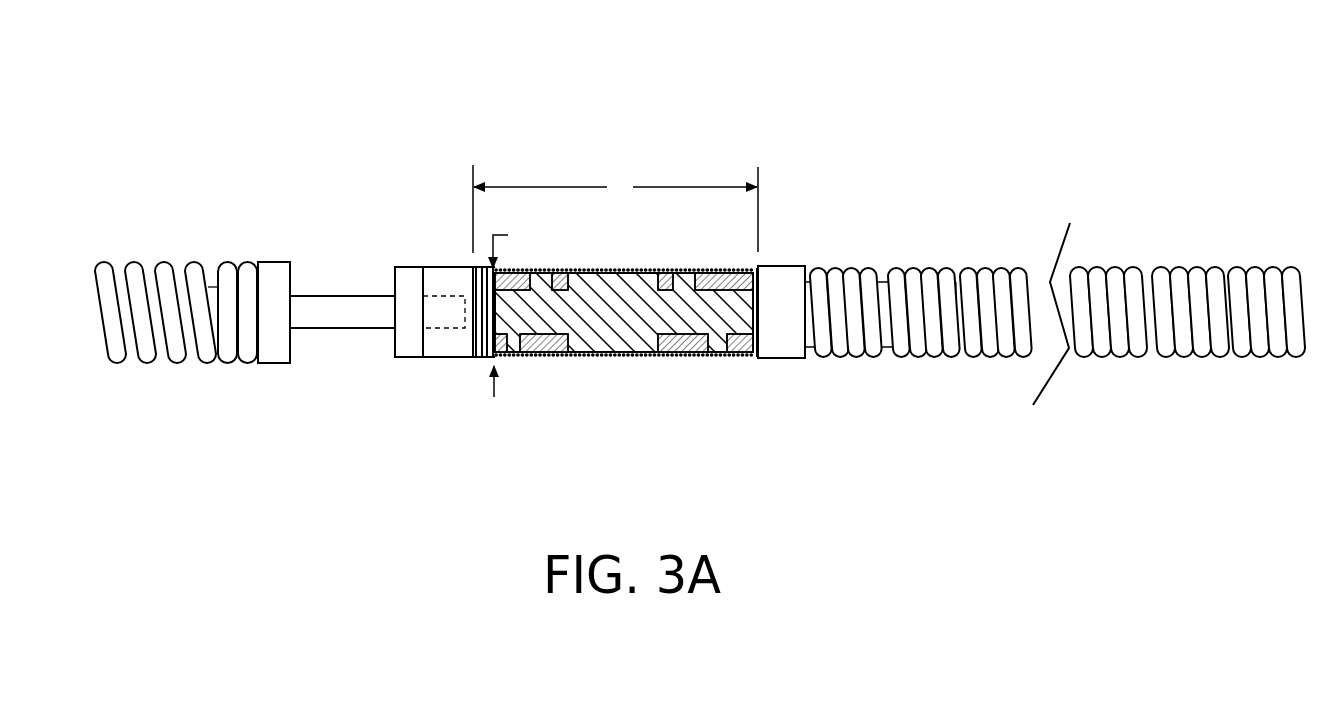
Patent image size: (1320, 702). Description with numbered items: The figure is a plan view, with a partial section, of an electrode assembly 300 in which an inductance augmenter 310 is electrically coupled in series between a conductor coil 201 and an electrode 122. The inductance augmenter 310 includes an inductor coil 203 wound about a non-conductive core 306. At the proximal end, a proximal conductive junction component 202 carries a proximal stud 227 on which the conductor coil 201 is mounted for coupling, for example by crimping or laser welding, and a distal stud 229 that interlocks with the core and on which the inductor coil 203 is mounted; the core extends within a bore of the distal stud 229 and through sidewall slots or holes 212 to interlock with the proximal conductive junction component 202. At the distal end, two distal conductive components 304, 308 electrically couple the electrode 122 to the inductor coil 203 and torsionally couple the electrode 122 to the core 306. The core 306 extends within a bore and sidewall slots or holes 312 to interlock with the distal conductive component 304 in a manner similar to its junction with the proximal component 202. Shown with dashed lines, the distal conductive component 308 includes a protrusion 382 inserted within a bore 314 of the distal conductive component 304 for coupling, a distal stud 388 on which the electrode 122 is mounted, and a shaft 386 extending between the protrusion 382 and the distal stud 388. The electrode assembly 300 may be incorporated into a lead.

The electrode assembly 300 is at (280, 150).
The electrode 122 is at (138, 375).
The distal stud 388 is at (210, 287).
The distal conductive component 308 is at (325, 265).
The shaft 386 is at (344, 318).
The distal conductive component 304 is at (455, 238).
The protrusion 382 is at (433, 322).
The bore 314 is at (458, 316).
The inductance augmenter 310 is at (600, 423).
The inductor coil 203 is at (548, 360).
The non-conductive core 306 is at (627, 342).
The sidewall slots or holes 312 is at (535, 283).
The sidewall slots or holes 212 is at (673, 270).
The distal stud 229 is at (757, 353).
The proximal conductive junction component 202 is at (785, 232).
The proximal stud 227 is at (885, 282).
The conductor coil 201 is at (926, 288).